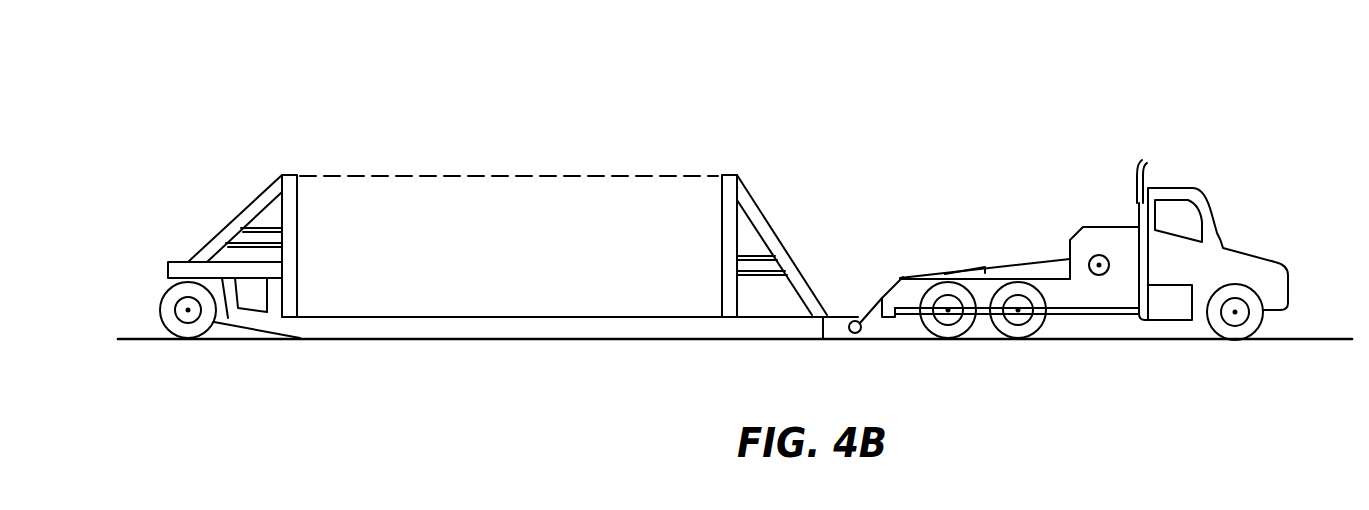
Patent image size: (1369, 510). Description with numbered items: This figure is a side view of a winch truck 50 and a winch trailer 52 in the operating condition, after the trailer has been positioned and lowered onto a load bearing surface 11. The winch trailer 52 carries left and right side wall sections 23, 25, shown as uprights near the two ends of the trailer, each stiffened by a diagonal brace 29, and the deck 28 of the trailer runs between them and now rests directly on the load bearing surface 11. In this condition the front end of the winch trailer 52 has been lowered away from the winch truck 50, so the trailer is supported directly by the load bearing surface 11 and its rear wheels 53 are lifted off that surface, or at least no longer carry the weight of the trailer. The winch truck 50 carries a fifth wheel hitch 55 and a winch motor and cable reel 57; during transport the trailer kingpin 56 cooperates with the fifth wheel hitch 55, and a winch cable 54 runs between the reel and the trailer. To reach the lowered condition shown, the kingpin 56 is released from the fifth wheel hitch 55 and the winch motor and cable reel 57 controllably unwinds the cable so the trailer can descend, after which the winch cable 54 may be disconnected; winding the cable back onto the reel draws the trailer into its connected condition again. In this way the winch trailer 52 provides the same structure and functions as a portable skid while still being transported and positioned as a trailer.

The load bearing surface 11 is at (1313, 338).
The left side wall section 23 is at (297, 230).
The right side wall section 25 is at (720, 222).
The trailer deck 28 is at (503, 315).
The diagonal brace 29 is at (243, 207).
The winch truck 50 is at (1170, 188).
The winch trailer 52 is at (389, 121).
The rear wheels 53 is at (163, 293).
The winch cable 54 is at (1032, 257).
The fifth wheel hitch 55 is at (975, 269).
The kingpin 56 is at (823, 313).
The winch motor and cable reel 57 is at (1098, 254).